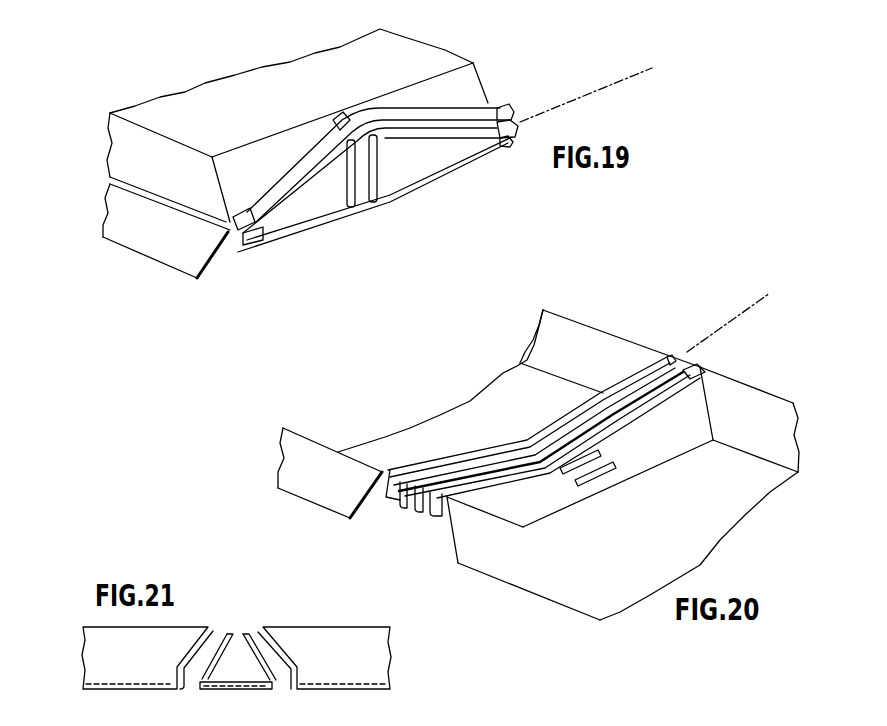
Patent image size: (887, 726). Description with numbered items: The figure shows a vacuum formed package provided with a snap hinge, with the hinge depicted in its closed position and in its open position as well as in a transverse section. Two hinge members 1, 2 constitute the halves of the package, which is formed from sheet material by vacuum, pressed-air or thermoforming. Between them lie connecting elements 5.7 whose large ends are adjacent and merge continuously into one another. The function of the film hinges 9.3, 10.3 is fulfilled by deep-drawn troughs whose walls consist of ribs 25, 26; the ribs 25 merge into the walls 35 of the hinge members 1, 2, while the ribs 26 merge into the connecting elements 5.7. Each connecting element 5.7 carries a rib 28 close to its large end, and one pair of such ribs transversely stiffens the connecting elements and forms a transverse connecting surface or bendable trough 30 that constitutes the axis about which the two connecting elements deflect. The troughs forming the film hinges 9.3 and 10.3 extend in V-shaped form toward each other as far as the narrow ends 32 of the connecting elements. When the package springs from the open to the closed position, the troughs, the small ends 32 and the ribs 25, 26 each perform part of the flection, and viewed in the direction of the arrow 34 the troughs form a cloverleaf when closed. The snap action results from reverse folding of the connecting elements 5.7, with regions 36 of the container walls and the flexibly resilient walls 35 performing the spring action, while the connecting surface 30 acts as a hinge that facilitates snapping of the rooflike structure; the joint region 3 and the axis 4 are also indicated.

In FIG. 19, the hinge member 1 is at (150, 228).
In FIG. 20, the hinge member 1 is at (392, 437).
In FIG. 21, the hinge member 1 is at (158, 678).
In FIG. 19, the hinge member 2 is at (170, 157).
In FIG. 20, the hinge member 2 is at (713, 517).
In FIG. 21, the hinge member 2 is at (360, 675).
In FIG. 19, the joint connection 3 is at (413, 207).
In FIG. 19, the axis 4 is at (578, 75).
In FIG. 20, the axis 4 is at (738, 314).
In FIG. 19, the connecting element 5.7 is at (313, 210).
In FIG. 20, the connecting element 5.7 is at (617, 433).
In FIG. 19, the film hinge 9.3 is at (257, 243).
In FIG. 20, the film hinge 9.3 is at (393, 497).
In FIG. 21, the film hinge 9.3 is at (213, 643).
In FIG. 19, the film hinge 10.3 is at (231, 215).
In FIG. 20, the film hinge 10.3 is at (431, 517).
In FIG. 21, the film hinge 10.3 is at (255, 637).
In FIG. 20, the rib 25 is at (640, 370).
In FIG. 21, the rib 25 is at (280, 640).
In FIG. 20, the rib 26 is at (687, 362).
In FIG. 21, the rib 26 is at (267, 673).
In FIG. 19, the rib 28 is at (340, 127).
In FIG. 20, the rib 28 is at (573, 470).
In FIG. 21, the rib 28 is at (237, 683).
In FIG. 19, the bendable trough 30 is at (365, 157).
In FIG. 20, the bendable trough 30 is at (603, 468).
In FIG. 20, the narrow end 32 is at (410, 500).
In FIG. 19, the arrow 34 is at (205, 243).
In FIG. 20, the wall 35 is at (690, 423).
In FIG. 19, the region 36 is at (347, 93).
In FIG. 20, the region 36 is at (525, 430).